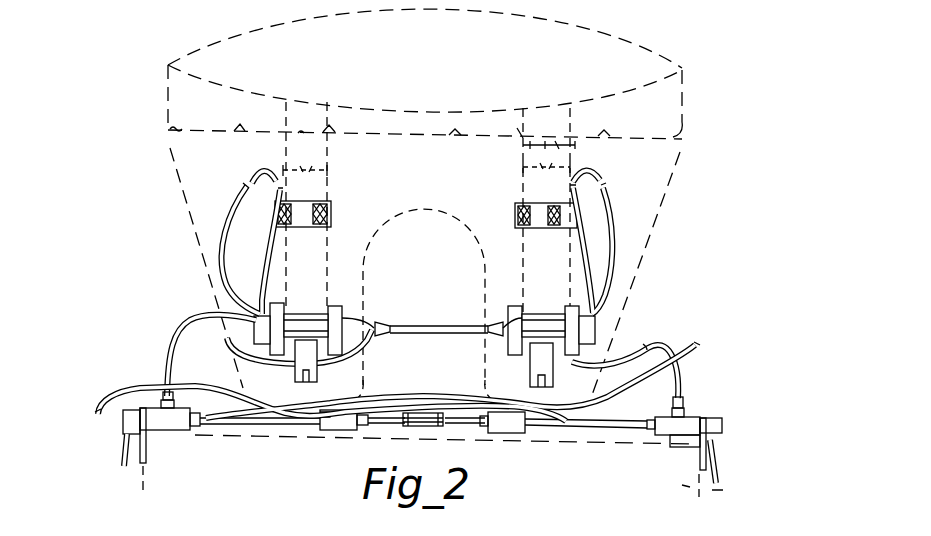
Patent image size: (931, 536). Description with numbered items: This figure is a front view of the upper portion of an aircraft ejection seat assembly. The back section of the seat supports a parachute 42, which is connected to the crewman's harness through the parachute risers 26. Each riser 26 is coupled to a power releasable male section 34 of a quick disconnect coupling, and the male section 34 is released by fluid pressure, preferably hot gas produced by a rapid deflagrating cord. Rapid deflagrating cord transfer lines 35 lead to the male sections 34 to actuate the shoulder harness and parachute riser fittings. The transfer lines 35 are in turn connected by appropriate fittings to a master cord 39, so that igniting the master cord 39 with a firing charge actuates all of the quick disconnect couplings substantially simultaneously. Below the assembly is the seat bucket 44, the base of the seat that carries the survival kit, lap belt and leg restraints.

The parachute 42 is at (673, 92).
The parachute riser 26 is at (345, 154).
The power releasable male section 34 is at (262, 318).
The rapid deflagrating cord transfer line 35 is at (270, 250).
The master cord 39 is at (436, 398).
The seat bucket 44 is at (746, 476).